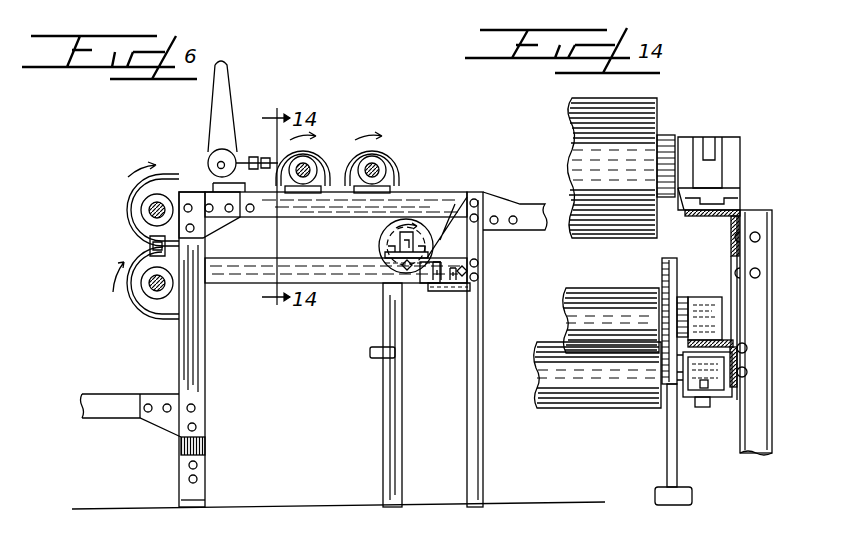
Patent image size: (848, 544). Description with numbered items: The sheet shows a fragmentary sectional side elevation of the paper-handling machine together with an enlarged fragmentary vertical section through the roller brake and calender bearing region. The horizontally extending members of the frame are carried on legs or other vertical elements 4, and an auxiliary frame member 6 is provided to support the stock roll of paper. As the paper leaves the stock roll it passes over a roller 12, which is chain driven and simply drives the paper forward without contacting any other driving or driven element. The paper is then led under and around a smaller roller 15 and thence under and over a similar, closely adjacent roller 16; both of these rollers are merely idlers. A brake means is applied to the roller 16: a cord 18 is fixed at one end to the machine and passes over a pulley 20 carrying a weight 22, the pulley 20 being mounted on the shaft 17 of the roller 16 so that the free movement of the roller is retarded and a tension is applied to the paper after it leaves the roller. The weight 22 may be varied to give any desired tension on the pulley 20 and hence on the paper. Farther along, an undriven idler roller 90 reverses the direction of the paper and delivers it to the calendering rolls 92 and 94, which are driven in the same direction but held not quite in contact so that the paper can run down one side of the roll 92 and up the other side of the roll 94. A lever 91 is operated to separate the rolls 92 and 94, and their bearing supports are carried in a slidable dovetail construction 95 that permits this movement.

In FIG. 6, the legs 4 is at (200, 376).
In FIG. 6, the auxiliary frame member 6 is at (103, 407).
In FIG. 6, the roller 12 is at (130, 300).
In FIG. 6, the roller 15 is at (444, 292).
In FIG. 14, the roller 15 is at (562, 400).
In FIG. 14, the roller 16 is at (580, 310).
In FIG. 6, the shaft 17 is at (393, 232).
In FIG. 6, the cord 18 is at (446, 228).
In FIG. 14, the cord 18 is at (672, 433).
In FIG. 6, the pulley 20 is at (383, 243).
In FIG. 14, the pulley 20 is at (662, 265).
In FIG. 6, the weight 22 is at (378, 356).
In FIG. 14, the weight 22 is at (683, 497).
In FIG. 6, the roller 90 is at (128, 190).
In FIG. 6, the lever 91 is at (224, 112).
In FIG. 6, the calendering roll 92 is at (318, 140).
In FIG. 14, the calendering roll 92 is at (642, 113).
In FIG. 6, the calendering roll 94 is at (388, 140).
In FIG. 14, the slidable dovetail construction 95 is at (703, 190).